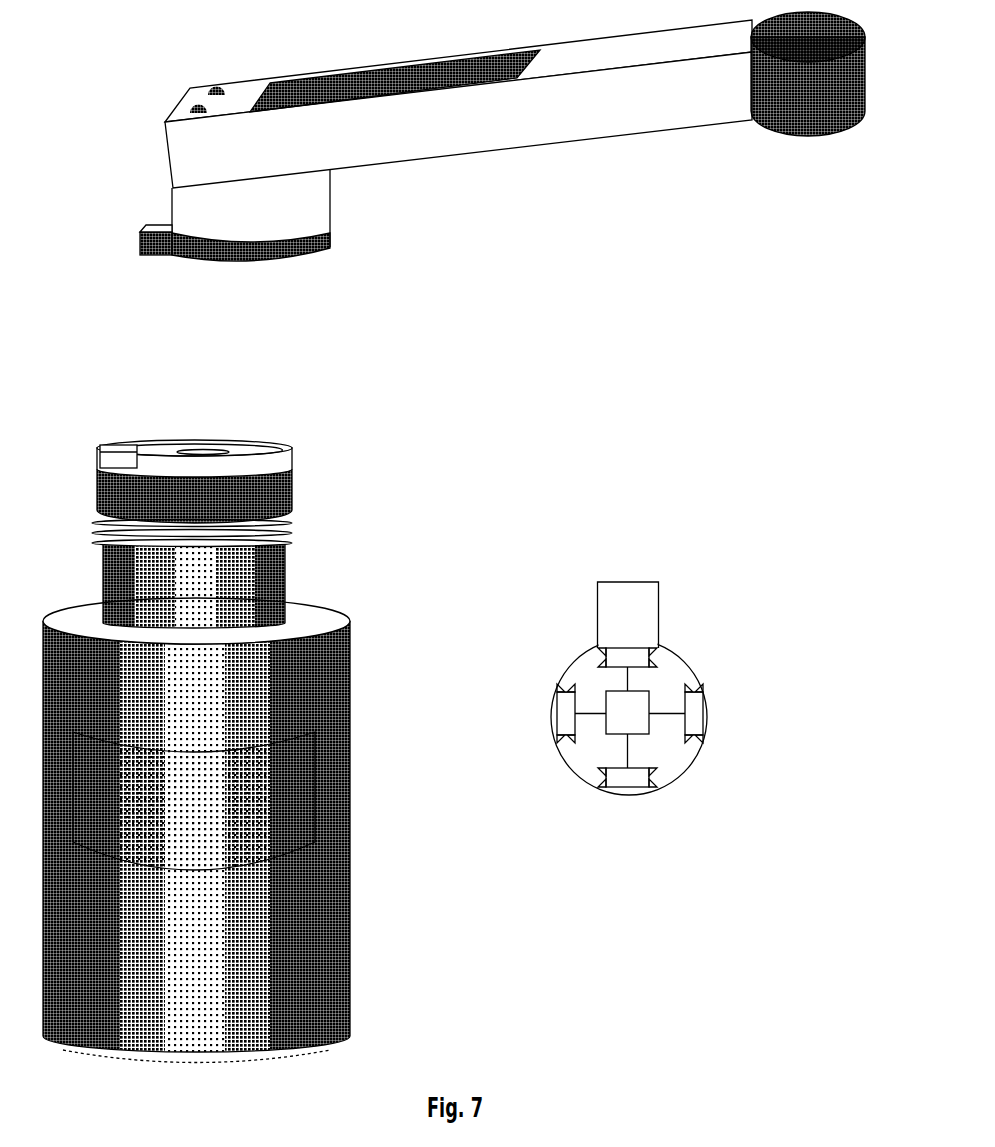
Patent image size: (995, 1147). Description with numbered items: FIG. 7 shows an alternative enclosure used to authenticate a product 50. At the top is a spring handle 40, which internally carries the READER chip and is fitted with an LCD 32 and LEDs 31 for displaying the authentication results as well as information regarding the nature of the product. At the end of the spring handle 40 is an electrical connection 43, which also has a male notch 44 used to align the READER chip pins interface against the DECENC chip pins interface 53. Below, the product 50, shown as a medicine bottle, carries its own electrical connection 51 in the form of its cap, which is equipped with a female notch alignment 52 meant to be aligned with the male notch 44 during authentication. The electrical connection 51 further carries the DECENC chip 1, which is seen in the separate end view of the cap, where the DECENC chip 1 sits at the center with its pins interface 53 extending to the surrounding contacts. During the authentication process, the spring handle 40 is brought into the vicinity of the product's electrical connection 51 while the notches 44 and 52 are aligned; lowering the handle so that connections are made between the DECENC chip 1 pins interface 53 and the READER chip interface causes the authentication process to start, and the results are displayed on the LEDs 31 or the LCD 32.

The DECENC chip 1 is at (642, 732).
The LEDs 31 is at (190, 88).
The LCD 32 is at (309, 82).
The spring handle 40 is at (527, 128).
The electrical connection 43 is at (347, 247).
The male notch 44 is at (160, 262).
The product 50 is at (352, 603).
The electrical connection 51 is at (310, 458).
The female notch alignment 52 is at (98, 443).
The pins interface 53 is at (563, 727).